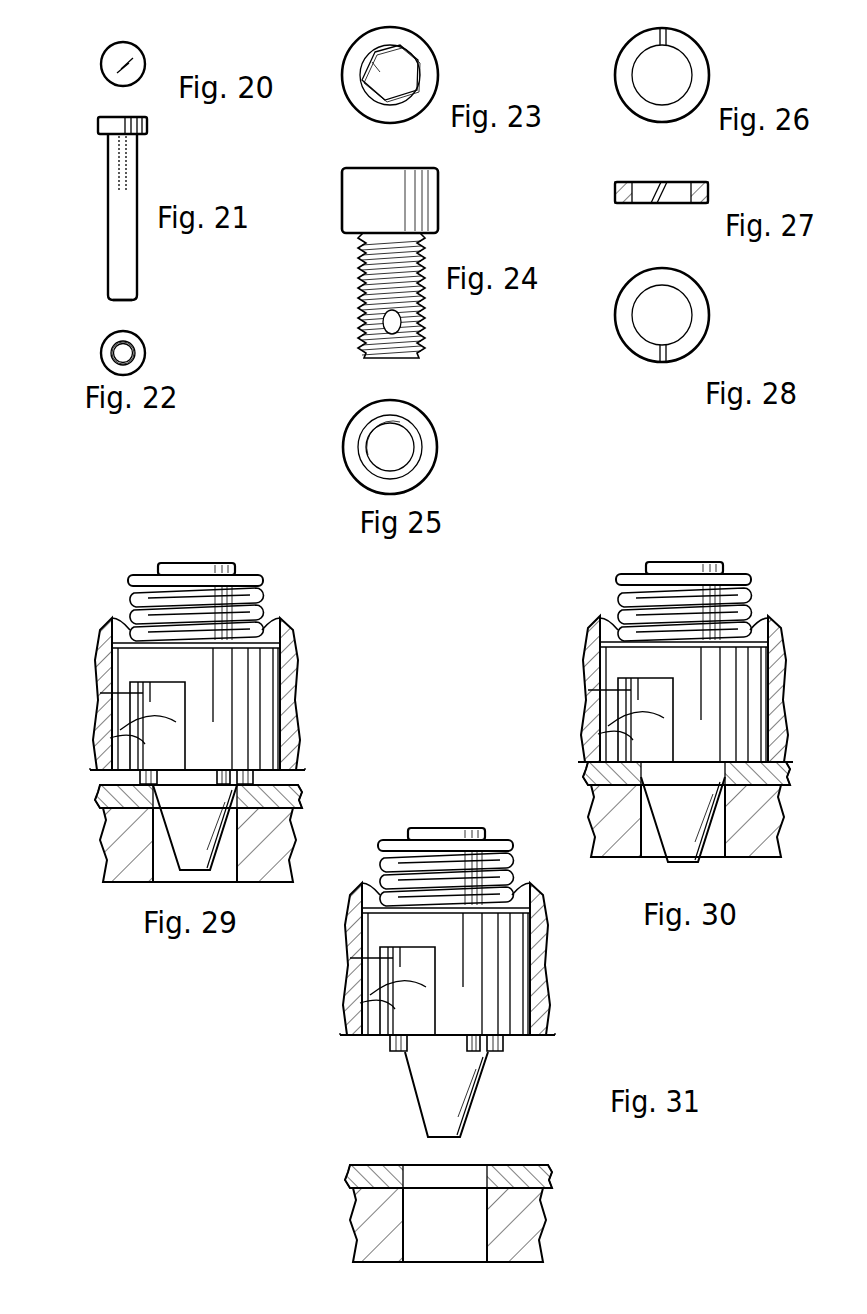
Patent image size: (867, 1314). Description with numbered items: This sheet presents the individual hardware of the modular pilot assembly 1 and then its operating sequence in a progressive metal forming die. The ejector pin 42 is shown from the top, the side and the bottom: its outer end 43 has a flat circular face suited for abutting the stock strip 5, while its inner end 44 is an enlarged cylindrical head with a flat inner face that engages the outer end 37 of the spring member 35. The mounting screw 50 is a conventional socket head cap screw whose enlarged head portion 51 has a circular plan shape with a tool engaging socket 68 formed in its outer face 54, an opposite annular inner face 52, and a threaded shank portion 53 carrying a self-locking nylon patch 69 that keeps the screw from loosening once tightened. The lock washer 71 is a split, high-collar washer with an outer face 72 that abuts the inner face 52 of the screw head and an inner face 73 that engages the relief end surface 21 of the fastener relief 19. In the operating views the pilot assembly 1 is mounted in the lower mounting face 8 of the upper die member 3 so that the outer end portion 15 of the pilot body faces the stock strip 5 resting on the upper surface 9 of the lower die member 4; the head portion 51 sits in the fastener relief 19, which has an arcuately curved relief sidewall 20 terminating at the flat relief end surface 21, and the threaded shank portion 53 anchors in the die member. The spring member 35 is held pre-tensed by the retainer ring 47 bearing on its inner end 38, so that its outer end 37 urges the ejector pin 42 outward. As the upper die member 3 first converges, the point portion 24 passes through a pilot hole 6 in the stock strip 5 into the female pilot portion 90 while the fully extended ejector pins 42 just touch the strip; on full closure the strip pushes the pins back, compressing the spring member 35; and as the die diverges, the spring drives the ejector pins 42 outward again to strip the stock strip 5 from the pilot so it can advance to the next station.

In FIG. 29, the pilot assembly 1 is at (252, 549).
In FIG. 30, the pilot assembly 1 is at (726, 520).
In FIG. 31, the pilot assembly 1 is at (480, 793).
In FIG. 29, the upper die member 3 is at (94, 645).
In FIG. 30, the upper die member 3 is at (697, 679).
In FIG. 31, the upper die member 3 is at (467, 959).
In FIG. 29, the lower die member 4 is at (104, 874).
In FIG. 30, the lower die member 4 is at (701, 832).
In FIG. 31, the lower die member 4 is at (424, 1225).
In FIG. 29, the stock strip 5 is at (300, 791).
In FIG. 30, the stock strip 5 is at (700, 765).
In FIG. 31, the stock strip 5 is at (473, 1162).
In FIG. 31, the pilot hole 6 is at (428, 1144).
In FIG. 29, the lower mounting face 8 is at (97, 770).
In FIG. 31, the lower mounting face 8 is at (428, 1050).
In FIG. 31, the upper surface 9 is at (537, 1194).
In FIG. 29, the outer end portion 15 is at (284, 666).
In FIG. 30, the outer end portion 15 is at (715, 700).
In FIG. 31, the outer end portion 15 is at (476, 954).
In FIG. 29, the fastener relief 19 is at (163, 692).
In FIG. 30, the fastener relief 19 is at (654, 704).
In FIG. 31, the fastener relief 19 is at (409, 977).
In FIG. 29, the relief sidewall 20 is at (120, 730).
In FIG. 30, the relief sidewall 20 is at (601, 729).
In FIG. 31, the relief sidewall 20 is at (364, 995).
In FIG. 29, the relief end surface 21 is at (100, 695).
In FIG. 30, the relief end surface 21 is at (589, 696).
In FIG. 31, the relief end surface 21 is at (347, 959).
In FIG. 29, the point portion 24 is at (215, 871).
In FIG. 30, the point portion 24 is at (692, 837).
In FIG. 31, the point portion 24 is at (465, 1097).
In FIG. 29, the spring member 35 is at (266, 612).
In FIG. 30, the spring member 35 is at (713, 605).
In FIG. 31, the spring member 35 is at (467, 871).
In FIG. 29, the outer end 37 is at (128, 614).
In FIG. 30, the outer end 37 is at (588, 599).
In FIG. 29, the inner end 38 is at (135, 590).
In FIG. 30, the inner end 38 is at (666, 609).
In FIG. 21, the ejector pin 42 is at (113, 208).
In FIG. 22, the ejector pin 42 is at (133, 346).
In FIG. 21, the outer end 43 is at (112, 301).
In FIG. 22, the outer end 43 is at (112, 346).
In FIG. 29, the outer end 43 is at (225, 785).
In FIG. 31, the outer end 43 is at (455, 1060).
In FIG. 20, the inner end 44 is at (104, 57).
In FIG. 21, the inner end 44 is at (98, 125).
In FIG. 22, the inner end 44 is at (146, 354).
In FIG. 29, the retainer ring 47 is at (160, 571).
In FIG. 30, the retainer ring 47 is at (646, 560).
In FIG. 31, the retainer ring 47 is at (414, 827).
In FIG. 23, the mounting screw 50 is at (412, 42).
In FIG. 24, the mounting screw 50 is at (437, 181).
In FIG. 25, the mounting screw 50 is at (437, 445).
In FIG. 23, the head portion 51 is at (353, 96).
In FIG. 24, the head portion 51 is at (360, 186).
In FIG. 25, the head portion 51 is at (425, 416).
In FIG. 24, the inner face 52 is at (351, 237).
In FIG. 25, the inner face 52 is at (345, 448).
In FIG. 24, the threaded shank portion 53 is at (360, 281).
In FIG. 25, the threaded shank portion 53 is at (388, 432).
In FIG. 23, the outer face 54 is at (428, 72).
In FIG. 24, the outer face 54 is at (375, 166).
In FIG. 23, the tool engaging socket 68 is at (380, 60).
In FIG. 24, the self-locking nylon patch 69 is at (376, 328).
In FIG. 26, the lock washer 71 is at (698, 48).
In FIG. 27, the lock washer 71 is at (623, 180).
In FIG. 28, the lock washer 71 is at (700, 290).
In FIG. 27, the outer face 72 is at (625, 205).
In FIG. 28, the outer face 72 is at (705, 318).
In FIG. 26, the inner face 73 is at (700, 75).
In FIG. 27, the inner face 73 is at (701, 180).
In FIG. 29, the female pilot portion 90 is at (160, 880).
In FIG. 30, the female pilot portion 90 is at (671, 839).
In FIG. 31, the female pilot portion 90 is at (491, 1225).